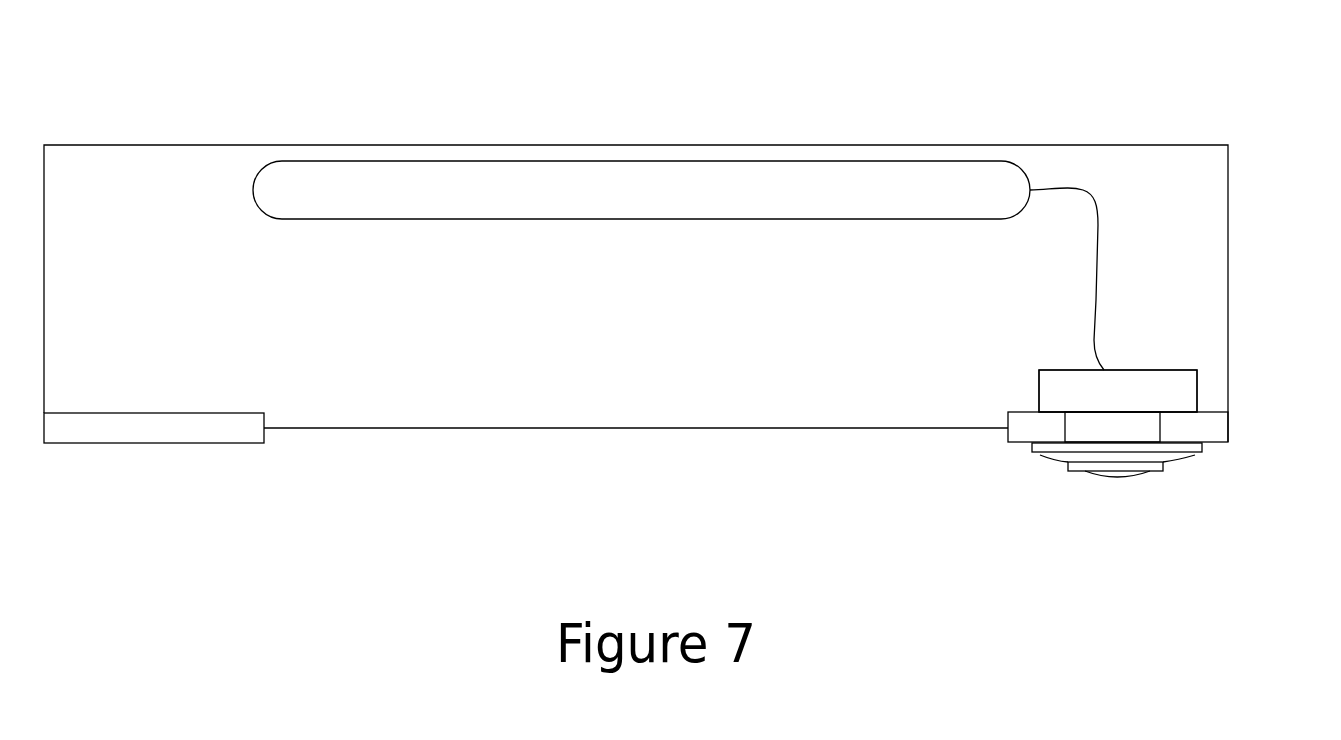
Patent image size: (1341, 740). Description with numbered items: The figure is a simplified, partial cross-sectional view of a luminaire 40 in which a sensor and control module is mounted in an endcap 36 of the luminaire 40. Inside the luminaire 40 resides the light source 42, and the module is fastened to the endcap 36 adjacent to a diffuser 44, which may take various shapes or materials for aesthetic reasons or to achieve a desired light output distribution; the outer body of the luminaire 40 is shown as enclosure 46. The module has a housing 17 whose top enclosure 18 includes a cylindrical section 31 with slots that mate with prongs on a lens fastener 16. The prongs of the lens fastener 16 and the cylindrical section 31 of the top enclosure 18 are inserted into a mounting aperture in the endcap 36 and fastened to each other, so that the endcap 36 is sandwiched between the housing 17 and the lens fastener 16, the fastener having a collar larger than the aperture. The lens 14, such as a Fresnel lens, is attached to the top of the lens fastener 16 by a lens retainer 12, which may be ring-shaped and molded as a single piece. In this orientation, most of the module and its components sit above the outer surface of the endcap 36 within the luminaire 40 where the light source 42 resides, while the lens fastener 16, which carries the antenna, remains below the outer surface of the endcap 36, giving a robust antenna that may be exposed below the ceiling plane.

The luminaire 40 is at (256, 102).
The light source 42 is at (623, 206).
The diffuser 44 is at (600, 430).
The housing 46 is at (1228, 207).
The housing 17 is at (1038, 391).
The top enclosure 18 is at (1133, 407).
The cylindrical section 31 is at (1130, 440).
The endcap 36 is at (1228, 428).
The lens fastener 16 is at (1040, 455).
The lens retainer 12 is at (1163, 464).
The lens 14 is at (1117, 477).